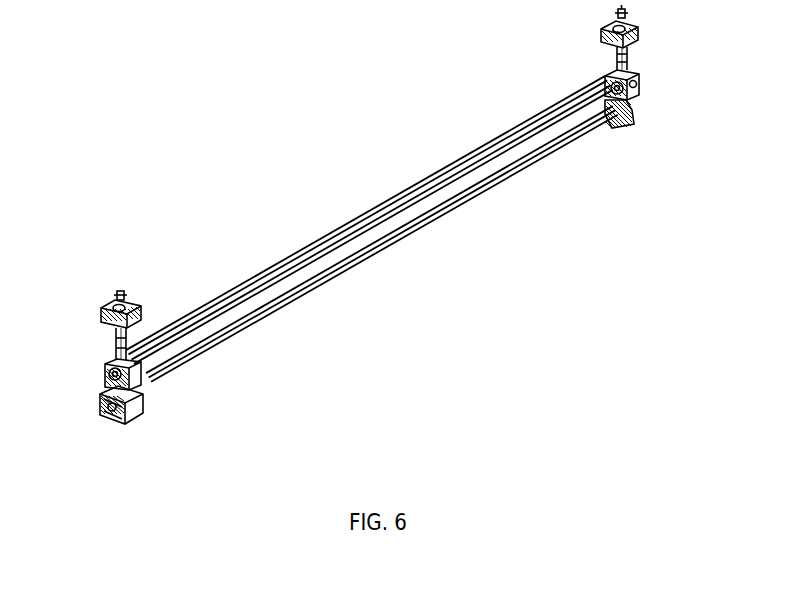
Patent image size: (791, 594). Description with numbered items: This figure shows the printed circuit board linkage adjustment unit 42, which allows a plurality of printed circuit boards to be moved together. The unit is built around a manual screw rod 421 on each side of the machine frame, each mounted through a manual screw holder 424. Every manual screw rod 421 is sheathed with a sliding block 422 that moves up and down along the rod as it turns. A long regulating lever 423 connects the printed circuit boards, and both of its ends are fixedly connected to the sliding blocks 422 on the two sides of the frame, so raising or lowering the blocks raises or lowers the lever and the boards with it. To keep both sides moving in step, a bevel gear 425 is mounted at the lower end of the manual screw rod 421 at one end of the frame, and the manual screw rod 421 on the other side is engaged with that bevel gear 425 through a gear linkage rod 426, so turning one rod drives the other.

The printed circuit board linkage adjustment unit 42 is at (503, 162).
The manual screw rod 421 is at (638, 32).
The sliding block 422 is at (636, 95).
The regulating lever 423 is at (444, 168).
The manual screw holder 424 is at (114, 313).
The bevel gear 425 is at (102, 412).
The gear linkage rod 426 is at (415, 232).